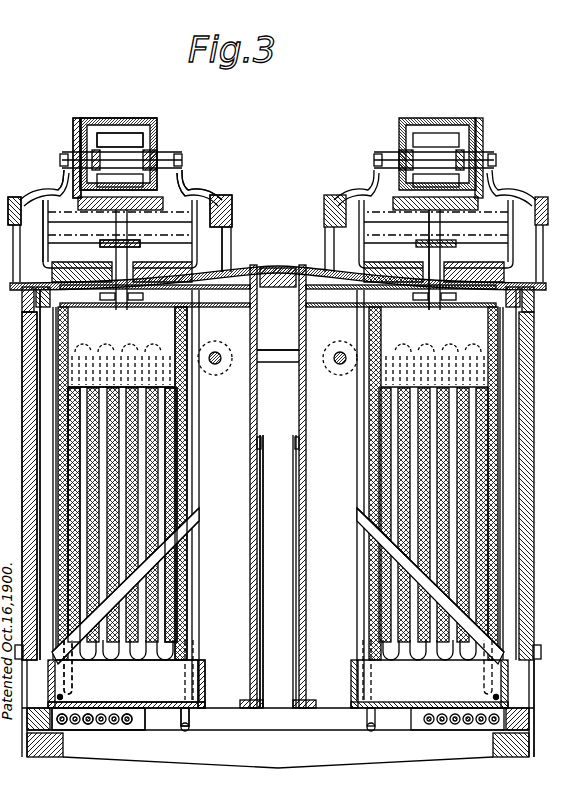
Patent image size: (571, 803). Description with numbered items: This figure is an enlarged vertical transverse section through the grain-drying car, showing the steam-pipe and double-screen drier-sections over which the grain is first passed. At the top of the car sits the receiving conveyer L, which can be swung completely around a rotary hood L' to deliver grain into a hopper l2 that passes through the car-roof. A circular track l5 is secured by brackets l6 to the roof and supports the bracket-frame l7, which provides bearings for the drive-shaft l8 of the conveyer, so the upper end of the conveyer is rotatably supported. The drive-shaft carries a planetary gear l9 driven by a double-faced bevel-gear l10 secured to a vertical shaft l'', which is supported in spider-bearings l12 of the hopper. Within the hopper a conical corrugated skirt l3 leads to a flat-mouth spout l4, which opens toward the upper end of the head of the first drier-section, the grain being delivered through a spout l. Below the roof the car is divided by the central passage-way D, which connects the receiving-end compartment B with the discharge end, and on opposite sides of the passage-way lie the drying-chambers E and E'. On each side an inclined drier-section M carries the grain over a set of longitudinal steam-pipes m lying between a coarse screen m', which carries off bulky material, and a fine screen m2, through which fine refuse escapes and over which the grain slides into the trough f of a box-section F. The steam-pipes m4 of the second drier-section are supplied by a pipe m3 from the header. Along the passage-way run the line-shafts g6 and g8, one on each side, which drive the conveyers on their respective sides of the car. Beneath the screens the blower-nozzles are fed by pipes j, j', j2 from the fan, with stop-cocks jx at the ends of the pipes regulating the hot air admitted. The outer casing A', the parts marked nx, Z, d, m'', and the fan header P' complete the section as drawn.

The planetary gear l9 is at (73, 126).
The rotary hood L' is at (268, 122).
The conveyer L is at (285, 139).
The drive-shaft l8 is at (186, 174).
The bracket-frame l7 is at (190, 186).
The circular track l5 is at (210, 218).
The double-faced bevel-gear l10 is at (78, 197).
The vertical shaft l'' is at (326, 216).
The hopper l2 is at (212, 246).
The conical corrugated skirt l3 is at (62, 240).
The brackets l6 is at (45, 268).
The spout l is at (388, 259).
The flat-mouth spout l4 is at (262, 350).
The spider-bearings l12 is at (405, 247).
The shell strip Z is at (167, 327).
The line-shaft g8 is at (215, 364).
The line-shaft g6 is at (340, 364).
The receiving-end compartment B is at (278, 372).
The steam-pipe and double-screen drier-section M is at (140, 446).
The outer casing A' is at (18, 486).
The casing inner wall nx is at (40, 655).
The drying-chamber E' is at (138, 580).
The drying-chamber E is at (413, 580).
The coarse screen m' is at (314, 578).
The steam-pipes m is at (364, 521).
The fine screen m2 is at (390, 557).
The column pipe d is at (273, 571).
The passage-way D is at (274, 571).
The steam-pipes m4 is at (80, 669).
The trough f is at (248, 675).
The stop-cocks jx is at (143, 712).
The pipe m3 is at (200, 672).
The box-sections F is at (352, 692).
The outlet pipe P' is at (270, 719).
The pipe j2 is at (90, 726).
The pipe j' is at (263, 733).
The pipe j is at (275, 733).
The casing base wall m'' is at (547, 708).